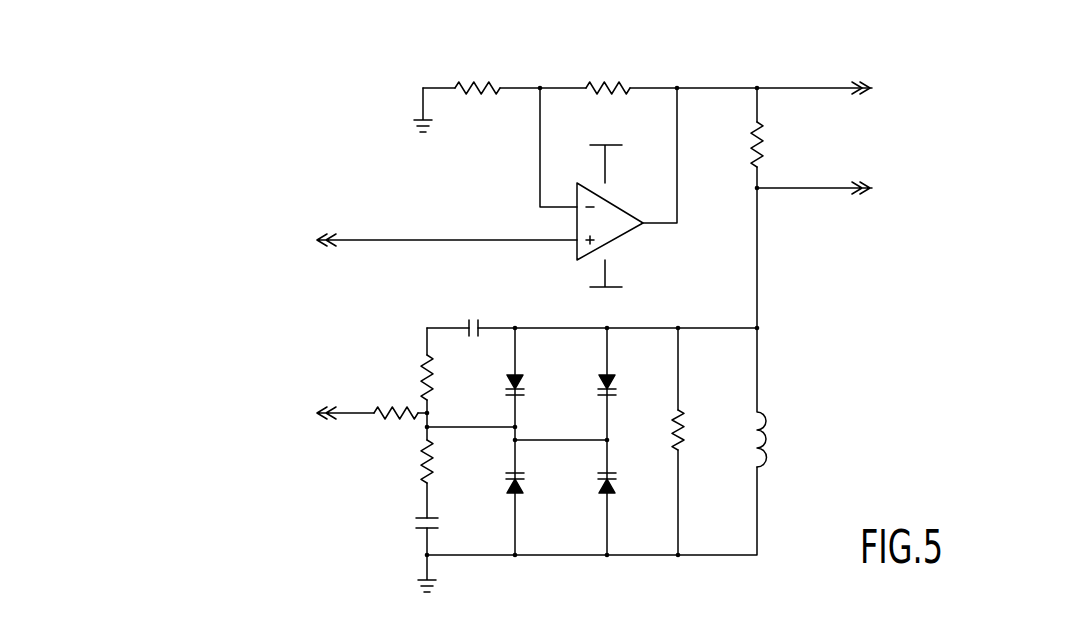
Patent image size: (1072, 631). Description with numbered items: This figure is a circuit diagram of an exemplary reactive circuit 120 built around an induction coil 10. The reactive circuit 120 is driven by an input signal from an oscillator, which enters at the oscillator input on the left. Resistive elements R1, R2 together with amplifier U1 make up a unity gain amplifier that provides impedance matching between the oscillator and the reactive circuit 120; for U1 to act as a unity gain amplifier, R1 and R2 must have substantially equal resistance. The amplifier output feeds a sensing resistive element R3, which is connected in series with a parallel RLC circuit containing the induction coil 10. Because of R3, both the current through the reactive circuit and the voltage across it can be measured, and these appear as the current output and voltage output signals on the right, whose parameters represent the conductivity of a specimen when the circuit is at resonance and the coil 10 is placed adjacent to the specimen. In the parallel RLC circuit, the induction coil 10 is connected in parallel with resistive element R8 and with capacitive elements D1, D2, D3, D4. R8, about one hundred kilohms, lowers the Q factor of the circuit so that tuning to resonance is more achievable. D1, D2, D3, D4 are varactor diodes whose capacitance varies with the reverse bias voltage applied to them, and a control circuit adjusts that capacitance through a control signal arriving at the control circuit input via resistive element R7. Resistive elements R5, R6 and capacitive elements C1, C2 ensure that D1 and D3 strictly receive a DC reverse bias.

The reactive circuit 120 is at (219, 118).
The induction coil 10 is at (768, 437).
The resistive element R1 is at (477, 78).
The resistive element R2 is at (608, 78).
The sensing resistive element R3 is at (768, 144).
The resistive element R5 is at (438, 377).
The resistive element R6 is at (438, 461).
The resistive element R7 is at (396, 404).
The resistive element R8 is at (689, 430).
The capacitive element C1 is at (473, 319).
The capacitive element C2 is at (434, 515).
The varactor diode D1 is at (524, 376).
The varactor diode D2 is at (524, 471).
The varactor diode D3 is at (616, 376).
The varactor diode D4 is at (616, 471).
The amplifier U1 is at (635, 227).